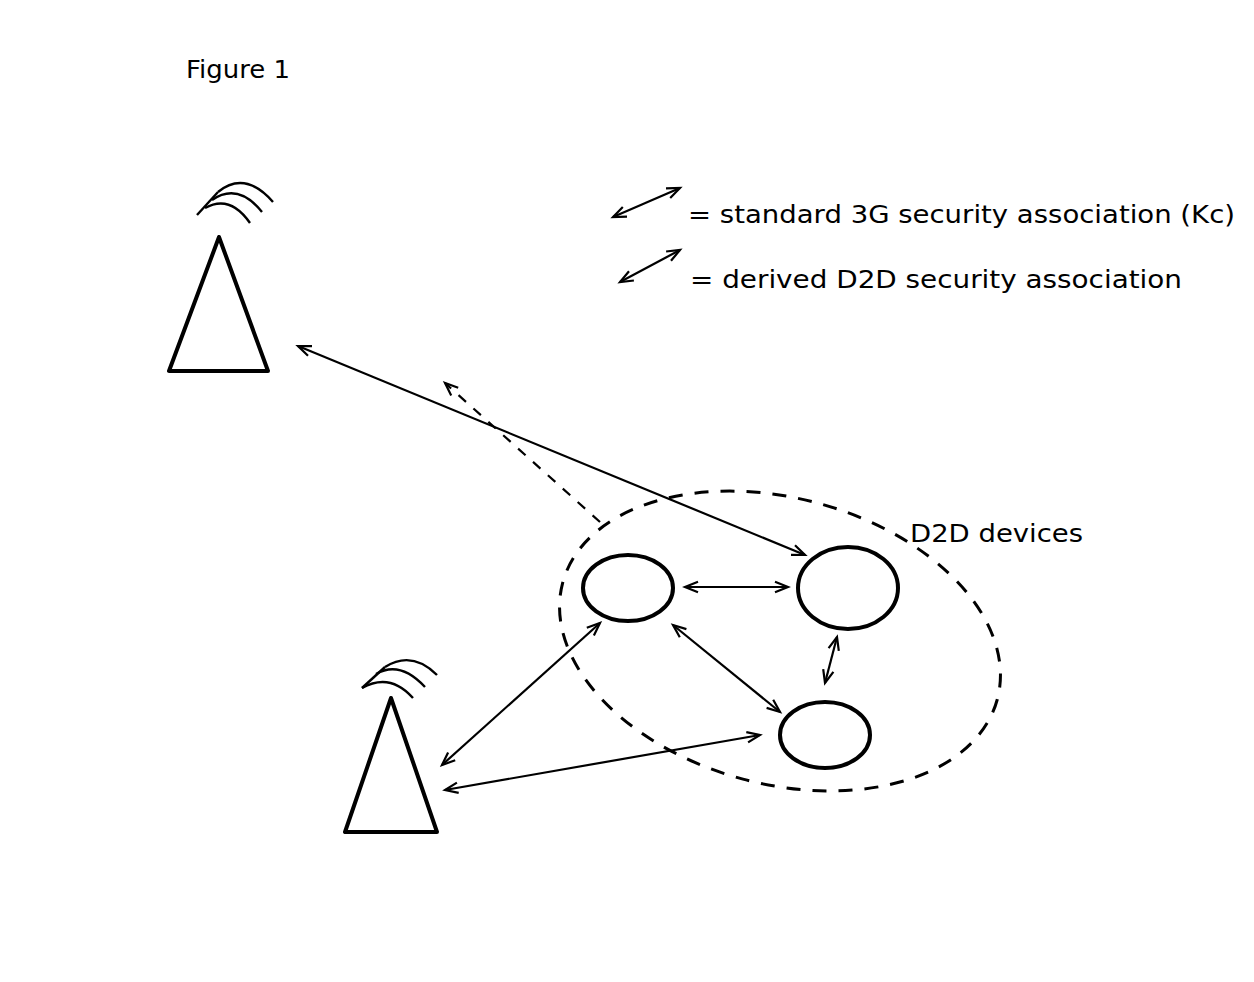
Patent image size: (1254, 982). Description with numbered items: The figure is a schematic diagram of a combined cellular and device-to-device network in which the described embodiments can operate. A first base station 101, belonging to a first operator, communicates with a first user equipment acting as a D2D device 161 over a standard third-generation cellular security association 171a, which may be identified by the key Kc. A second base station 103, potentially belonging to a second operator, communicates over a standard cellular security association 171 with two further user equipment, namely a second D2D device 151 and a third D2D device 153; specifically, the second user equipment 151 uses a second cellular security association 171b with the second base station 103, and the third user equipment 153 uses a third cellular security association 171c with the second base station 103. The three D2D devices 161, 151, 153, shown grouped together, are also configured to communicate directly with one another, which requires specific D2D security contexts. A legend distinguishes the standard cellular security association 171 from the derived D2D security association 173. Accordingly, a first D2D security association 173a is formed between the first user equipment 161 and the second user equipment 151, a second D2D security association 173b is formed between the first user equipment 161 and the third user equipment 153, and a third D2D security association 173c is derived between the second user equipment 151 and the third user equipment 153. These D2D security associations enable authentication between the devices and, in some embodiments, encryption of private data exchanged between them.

The first base station 101 is at (188, 316).
The second base station 103 is at (365, 777).
The second user equipment (D2D device) 151 is at (587, 578).
The third user equipment (D2D device) 153 is at (835, 762).
The first user equipment (D2D device) 161 is at (900, 587).
The standard 3G security association 171 is at (650, 200).
The derived D2D security association 173 is at (655, 268).
The standard 3G security association (Kc) 171a is at (592, 470).
The second 3G security association 171b is at (498, 690).
The third 3G security association 171c is at (555, 782).
The first D2D security association 173a is at (747, 591).
The second D2D security association 173b is at (840, 662).
The third D2D security association 173c is at (723, 662).